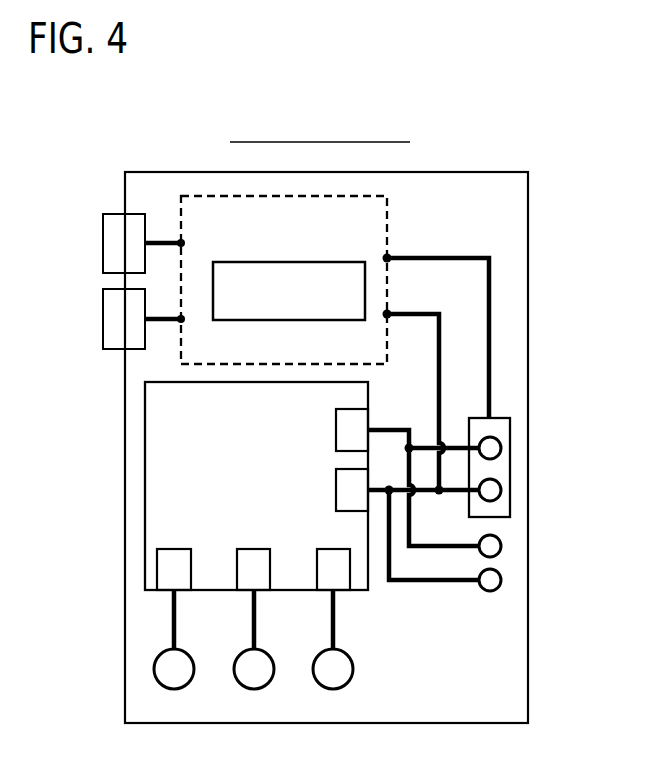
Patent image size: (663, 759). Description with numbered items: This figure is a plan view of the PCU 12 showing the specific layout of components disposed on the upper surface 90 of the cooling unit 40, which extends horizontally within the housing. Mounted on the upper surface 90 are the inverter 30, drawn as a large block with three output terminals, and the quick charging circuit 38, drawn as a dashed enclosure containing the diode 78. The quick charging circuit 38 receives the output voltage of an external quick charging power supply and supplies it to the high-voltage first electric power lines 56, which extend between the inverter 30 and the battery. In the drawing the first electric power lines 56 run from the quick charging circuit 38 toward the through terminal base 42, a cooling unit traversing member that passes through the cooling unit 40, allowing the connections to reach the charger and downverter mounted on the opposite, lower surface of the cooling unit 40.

The PCU 12 is at (116, 156).
The upper surface 90 is at (516, 222).
The quick charging circuit 38 is at (388, 217).
The diode 78 is at (289, 321).
The high-voltage first electric power lines 56 is at (487, 334).
The inverter 30 is at (145, 470).
The through terminal base 42 is at (512, 468).
The cooling unit 40 is at (528, 612).